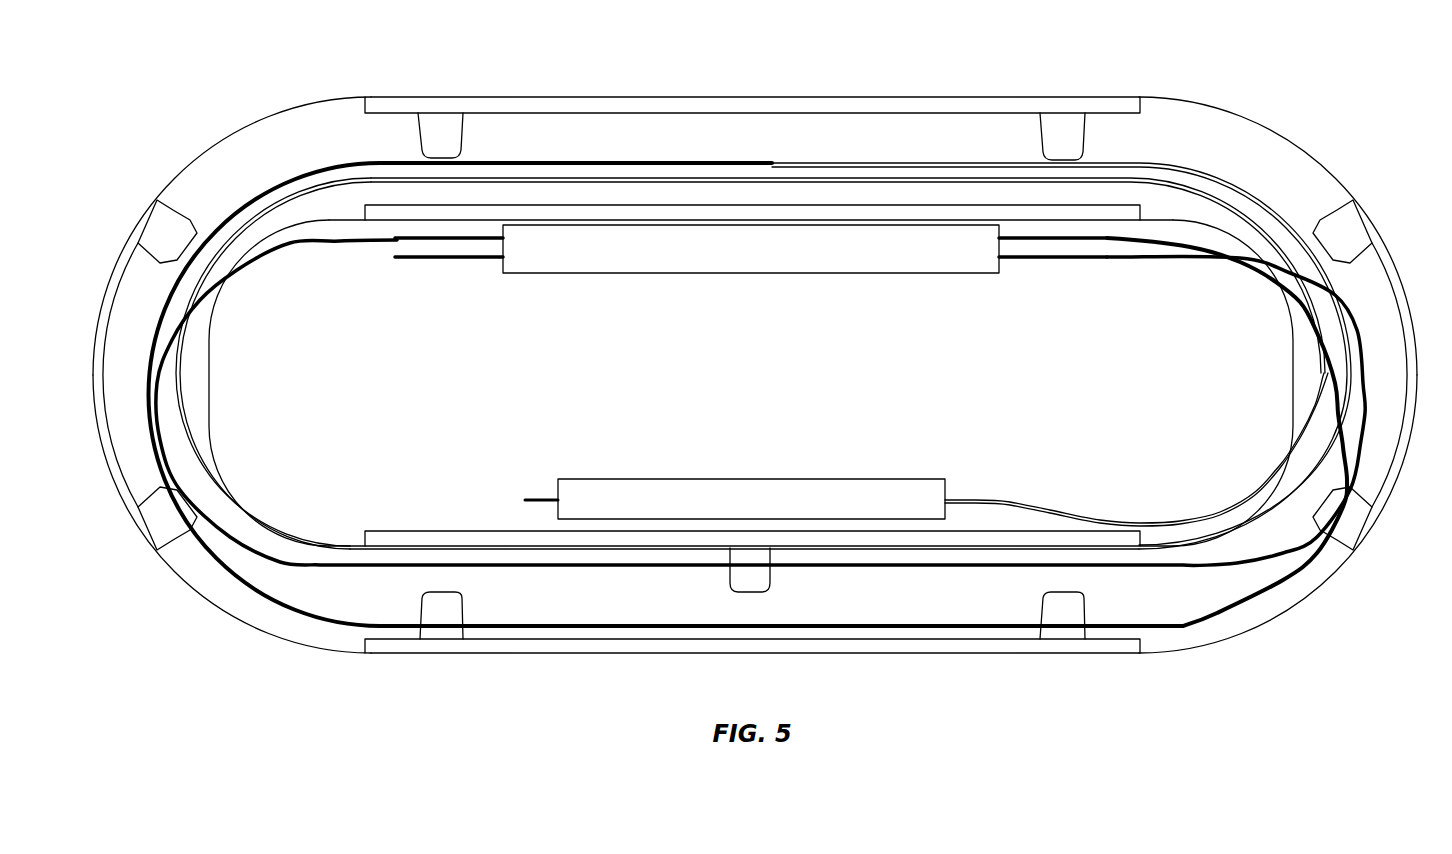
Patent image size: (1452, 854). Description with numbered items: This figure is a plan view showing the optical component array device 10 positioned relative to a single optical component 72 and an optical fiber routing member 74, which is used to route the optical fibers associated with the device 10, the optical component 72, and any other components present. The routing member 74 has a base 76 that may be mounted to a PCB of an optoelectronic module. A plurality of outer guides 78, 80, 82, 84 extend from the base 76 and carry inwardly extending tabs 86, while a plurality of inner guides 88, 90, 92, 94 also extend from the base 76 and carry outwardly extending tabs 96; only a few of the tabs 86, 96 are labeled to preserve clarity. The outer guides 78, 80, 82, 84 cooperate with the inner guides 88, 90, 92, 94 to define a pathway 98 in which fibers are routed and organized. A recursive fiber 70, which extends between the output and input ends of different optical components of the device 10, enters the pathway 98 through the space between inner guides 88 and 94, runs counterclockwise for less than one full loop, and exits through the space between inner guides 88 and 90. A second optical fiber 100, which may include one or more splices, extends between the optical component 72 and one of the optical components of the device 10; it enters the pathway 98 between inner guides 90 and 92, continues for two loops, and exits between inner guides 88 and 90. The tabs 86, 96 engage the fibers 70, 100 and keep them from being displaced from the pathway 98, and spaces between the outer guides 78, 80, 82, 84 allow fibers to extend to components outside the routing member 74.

The optical component array device 10 is at (670, 220).
The recursive fiber 70 is at (288, 574).
The optical component 72 is at (838, 521).
The optical fiber routing member 74 is at (1261, 98).
The base 76 is at (305, 135).
The outer guide 78 is at (540, 97).
The outer guide 80 is at (1380, 507).
The outer guide 82 is at (567, 655).
The outer guide 84 is at (120, 507).
The inwardly extending tab 86 is at (1060, 135).
The inner guide 88 is at (620, 215).
The inner guide 90 is at (1312, 375).
The inner guide 92 is at (648, 537).
The inner guide 94 is at (188, 372).
The outwardly extending tab 96 is at (762, 198).
The pathway 98 is at (508, 607).
The second optical fiber 100 is at (1055, 508).